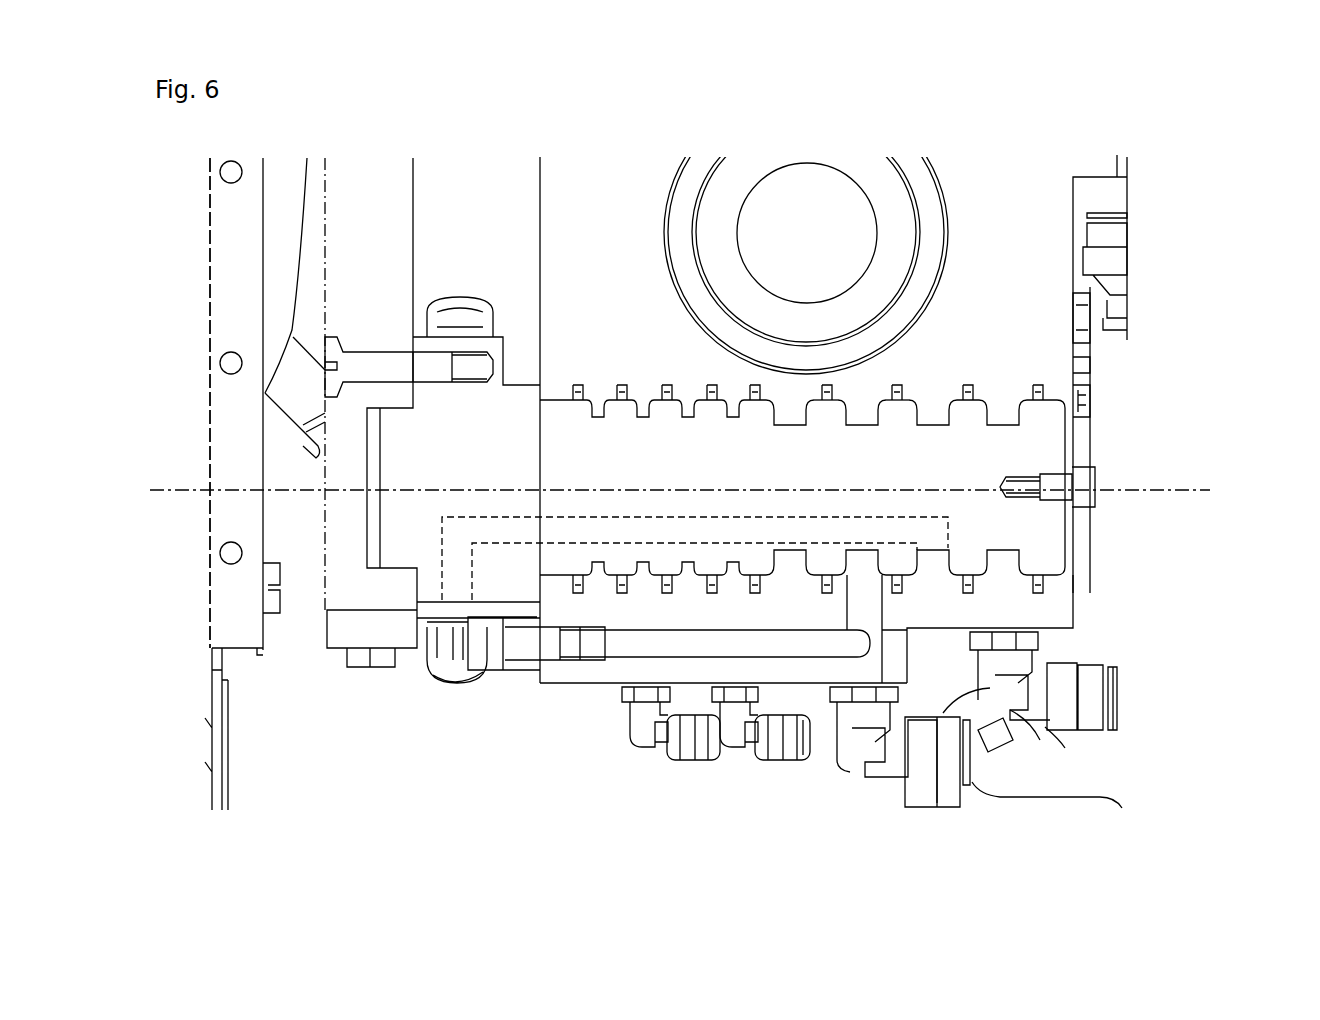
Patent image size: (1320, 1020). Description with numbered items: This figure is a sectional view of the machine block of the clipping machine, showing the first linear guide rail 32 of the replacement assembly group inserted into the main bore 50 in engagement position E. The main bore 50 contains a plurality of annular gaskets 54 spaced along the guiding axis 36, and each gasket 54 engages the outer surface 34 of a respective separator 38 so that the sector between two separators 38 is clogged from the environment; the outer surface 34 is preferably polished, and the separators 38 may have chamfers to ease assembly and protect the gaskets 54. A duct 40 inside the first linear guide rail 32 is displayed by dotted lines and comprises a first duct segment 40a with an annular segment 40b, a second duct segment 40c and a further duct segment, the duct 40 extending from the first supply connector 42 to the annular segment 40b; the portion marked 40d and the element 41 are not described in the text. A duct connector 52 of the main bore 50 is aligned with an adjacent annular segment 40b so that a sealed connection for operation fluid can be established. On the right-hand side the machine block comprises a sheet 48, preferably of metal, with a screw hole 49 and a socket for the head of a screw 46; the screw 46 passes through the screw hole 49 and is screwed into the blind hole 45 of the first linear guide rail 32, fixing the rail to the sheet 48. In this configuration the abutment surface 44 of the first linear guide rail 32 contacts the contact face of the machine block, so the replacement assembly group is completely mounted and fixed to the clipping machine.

The first linear guide rail 32 is at (990, 518).
The outer surface 34 is at (893, 415).
The guiding axis 36 is at (1117, 482).
The separators 38 is at (890, 412).
The duct 40 is at (465, 538).
The first duct segment 40a is at (1008, 570).
The annular segment 40b is at (928, 415).
The second duct segment 40c is at (637, 528).
The manifold block portion 40d is at (425, 711).
The lower block 41 is at (933, 538).
The first supply connector 42 is at (457, 313).
The abutment surface 44 is at (415, 577).
The blind hole 45 is at (1013, 483).
The screw 46 is at (1088, 492).
The sheet 48 is at (1078, 448).
The screw hole 49 is at (1087, 467).
The main bore 50 is at (790, 407).
The duct connector 52 is at (862, 578).
The gaskets 54 is at (972, 385).
The engagement position E is at (584, 178).